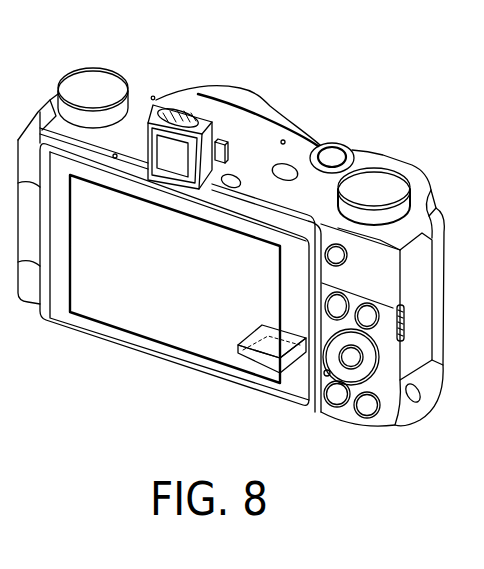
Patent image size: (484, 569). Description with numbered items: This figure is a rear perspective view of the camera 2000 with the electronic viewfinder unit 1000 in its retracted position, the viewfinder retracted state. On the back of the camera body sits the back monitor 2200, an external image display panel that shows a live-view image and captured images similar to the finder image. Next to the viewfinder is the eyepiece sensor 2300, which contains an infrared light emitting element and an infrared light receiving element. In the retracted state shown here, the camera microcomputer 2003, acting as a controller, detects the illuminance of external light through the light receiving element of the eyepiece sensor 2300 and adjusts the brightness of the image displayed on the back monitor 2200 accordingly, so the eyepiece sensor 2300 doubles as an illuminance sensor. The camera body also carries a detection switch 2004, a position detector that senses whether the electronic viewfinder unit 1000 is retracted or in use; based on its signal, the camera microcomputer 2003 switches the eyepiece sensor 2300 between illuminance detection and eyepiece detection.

The electronic viewfinder unit 1000 is at (205, 133).
The camera 2000 is at (380, 95).
The back monitor 2200 is at (167, 328).
The eyepiece sensor 2300 is at (232, 176).
The detection switch 2004 is at (229, 142).
The camera microcomputer 2003 is at (282, 372).